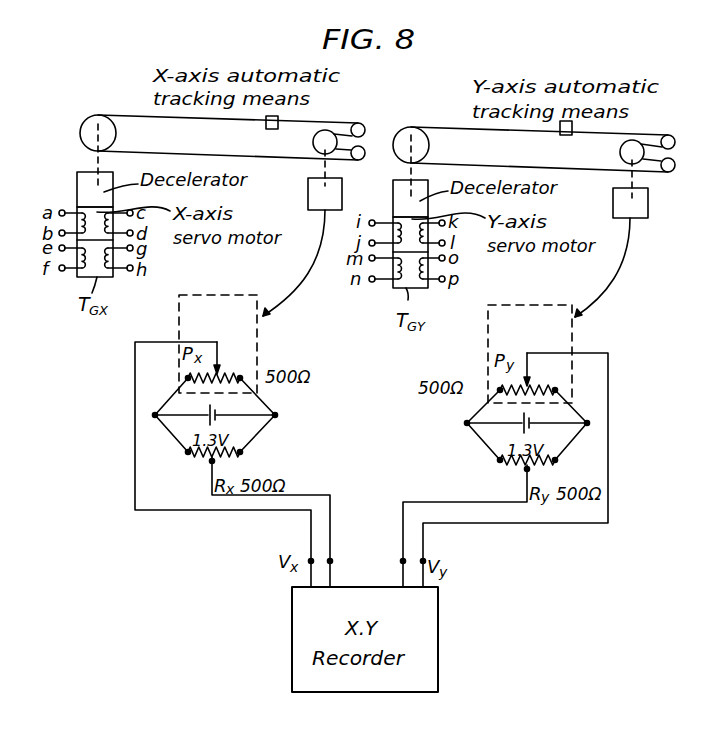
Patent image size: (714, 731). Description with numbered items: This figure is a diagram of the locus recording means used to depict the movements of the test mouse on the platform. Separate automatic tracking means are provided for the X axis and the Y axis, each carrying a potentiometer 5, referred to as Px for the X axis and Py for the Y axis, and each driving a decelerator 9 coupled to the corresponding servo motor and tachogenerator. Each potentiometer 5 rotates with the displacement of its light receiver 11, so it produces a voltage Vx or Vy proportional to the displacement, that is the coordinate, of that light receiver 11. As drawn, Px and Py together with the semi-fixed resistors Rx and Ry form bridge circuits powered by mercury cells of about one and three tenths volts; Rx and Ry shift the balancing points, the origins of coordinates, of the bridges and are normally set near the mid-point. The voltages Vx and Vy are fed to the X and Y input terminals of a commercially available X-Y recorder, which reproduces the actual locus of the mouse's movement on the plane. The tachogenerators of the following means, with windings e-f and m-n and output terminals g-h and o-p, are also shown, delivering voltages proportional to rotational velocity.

The potentiometer 5 is at (308, 200).
The decelerator 9 is at (77, 211).
The light receiver 11 is at (268, 130).